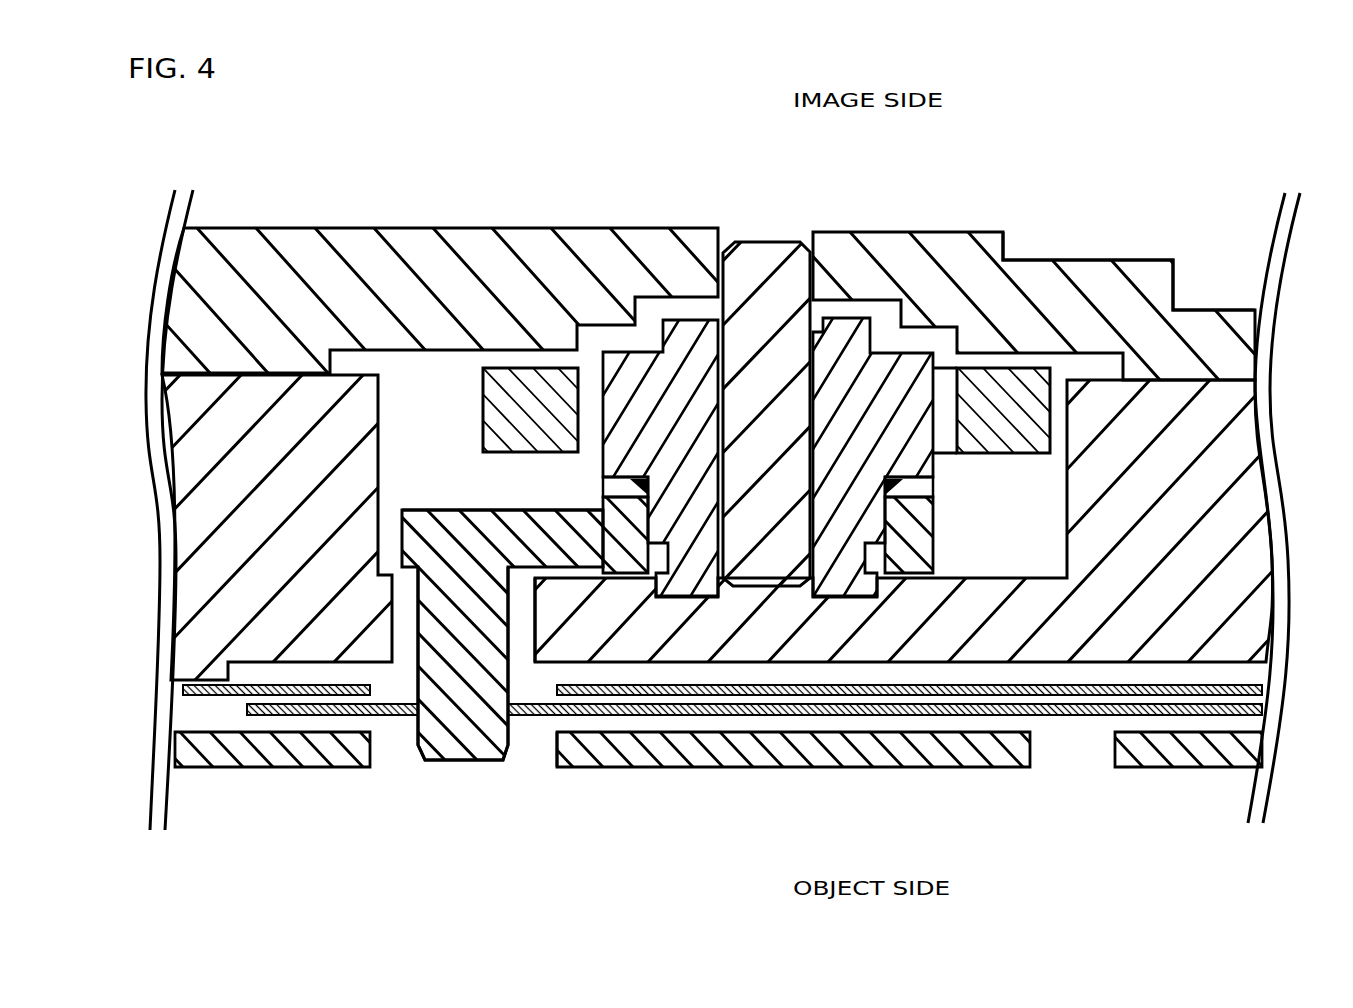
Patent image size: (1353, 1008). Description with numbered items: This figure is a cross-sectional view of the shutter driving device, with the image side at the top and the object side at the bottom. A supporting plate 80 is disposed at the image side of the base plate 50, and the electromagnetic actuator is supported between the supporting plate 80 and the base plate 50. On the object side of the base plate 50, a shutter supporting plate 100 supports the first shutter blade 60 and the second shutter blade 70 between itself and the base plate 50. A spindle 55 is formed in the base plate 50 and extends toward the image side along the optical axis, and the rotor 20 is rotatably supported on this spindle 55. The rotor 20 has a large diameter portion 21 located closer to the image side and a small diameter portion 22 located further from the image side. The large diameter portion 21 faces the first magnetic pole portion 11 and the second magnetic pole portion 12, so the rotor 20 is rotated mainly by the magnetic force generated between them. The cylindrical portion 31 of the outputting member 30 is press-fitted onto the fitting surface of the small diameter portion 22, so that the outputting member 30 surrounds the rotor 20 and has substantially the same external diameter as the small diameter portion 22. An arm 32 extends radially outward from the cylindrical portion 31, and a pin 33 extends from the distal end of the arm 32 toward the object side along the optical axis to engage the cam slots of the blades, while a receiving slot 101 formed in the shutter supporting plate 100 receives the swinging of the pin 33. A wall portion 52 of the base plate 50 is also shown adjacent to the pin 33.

The first magnetic pole portion 11 is at (1027, 433).
The second magnetic pole portion 12 is at (493, 410).
The rotor 20 is at (873, 313).
The large diameter portion 21 is at (665, 335).
The small diameter portion 22 is at (698, 535).
The outputting member 30 is at (423, 503).
The cylindrical portion 31 is at (613, 503).
The arm 32 is at (466, 538).
The pin 33 is at (444, 749).
The base plate 50 is at (1237, 453).
The housing wall 52 is at (533, 643).
The spindle 55 is at (753, 270).
The first shutter blade 60 is at (1053, 692).
The second shutter blade 70 is at (930, 714).
The supporting plate 80 is at (1127, 297).
The shutter supporting plate 100 is at (738, 760).
The receiving slot 101 is at (556, 760).